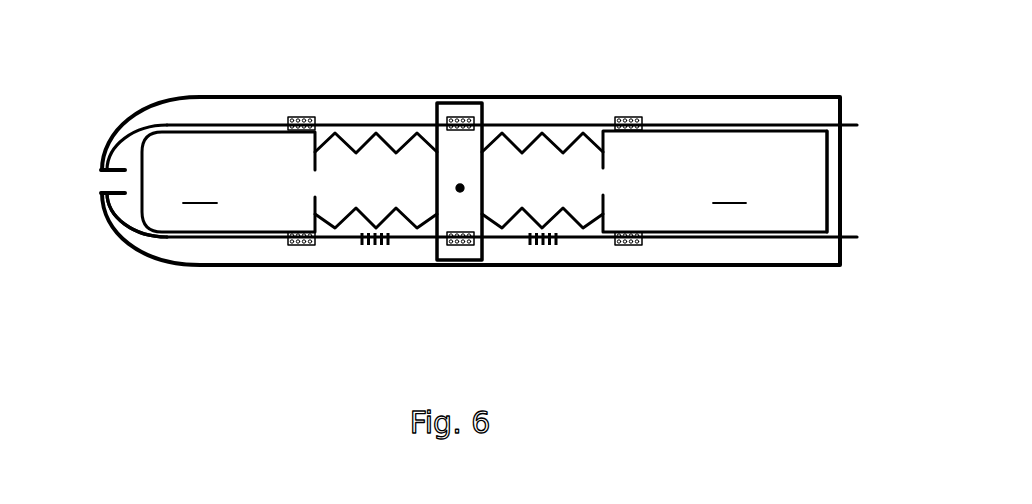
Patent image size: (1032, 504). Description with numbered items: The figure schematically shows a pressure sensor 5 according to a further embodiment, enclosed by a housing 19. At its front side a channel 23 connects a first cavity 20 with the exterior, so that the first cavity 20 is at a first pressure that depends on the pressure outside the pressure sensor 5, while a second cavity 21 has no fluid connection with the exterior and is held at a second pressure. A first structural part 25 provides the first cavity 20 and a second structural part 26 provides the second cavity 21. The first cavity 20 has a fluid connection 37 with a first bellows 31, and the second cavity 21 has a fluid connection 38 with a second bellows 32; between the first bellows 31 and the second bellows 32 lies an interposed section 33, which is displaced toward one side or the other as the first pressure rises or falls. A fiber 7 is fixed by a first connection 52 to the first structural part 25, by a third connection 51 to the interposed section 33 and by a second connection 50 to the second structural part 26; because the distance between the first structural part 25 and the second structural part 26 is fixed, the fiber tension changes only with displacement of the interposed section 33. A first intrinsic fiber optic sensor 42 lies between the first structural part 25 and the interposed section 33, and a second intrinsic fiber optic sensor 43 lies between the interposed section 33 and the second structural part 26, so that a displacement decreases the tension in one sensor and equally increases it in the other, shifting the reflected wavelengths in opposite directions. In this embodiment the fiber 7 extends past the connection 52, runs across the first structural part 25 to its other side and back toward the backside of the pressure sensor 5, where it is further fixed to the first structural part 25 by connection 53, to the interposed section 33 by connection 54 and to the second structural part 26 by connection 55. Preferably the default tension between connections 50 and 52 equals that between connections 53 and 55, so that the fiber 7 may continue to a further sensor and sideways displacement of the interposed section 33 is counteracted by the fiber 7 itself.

The pressure sensor 5 is at (583, 97).
The fiber 7 is at (142, 168).
The housing 19 is at (238, 97).
The first cavity 20 is at (125, 212).
The second cavity 21 is at (827, 198).
The channel 23 is at (122, 190).
The first structural part 25 is at (174, 132).
The second structural part 26 is at (827, 163).
The first bellows 31 is at (390, 138).
The second bellows 32 is at (518, 142).
The interposed section 33 is at (460, 188).
The fluid connection 37 is at (313, 180).
The fluid connection 38 is at (605, 180).
The first intrinsic fiber optic sensor 42 is at (378, 246).
The second intrinsic fiber optic sensor 43 is at (548, 247).
The second connection 50 is at (628, 245).
The third connection 51 is at (462, 246).
The first connection 52 is at (303, 245).
The connection 53 is at (303, 117).
The connection 54 is at (462, 117).
The connection 55 is at (628, 117).